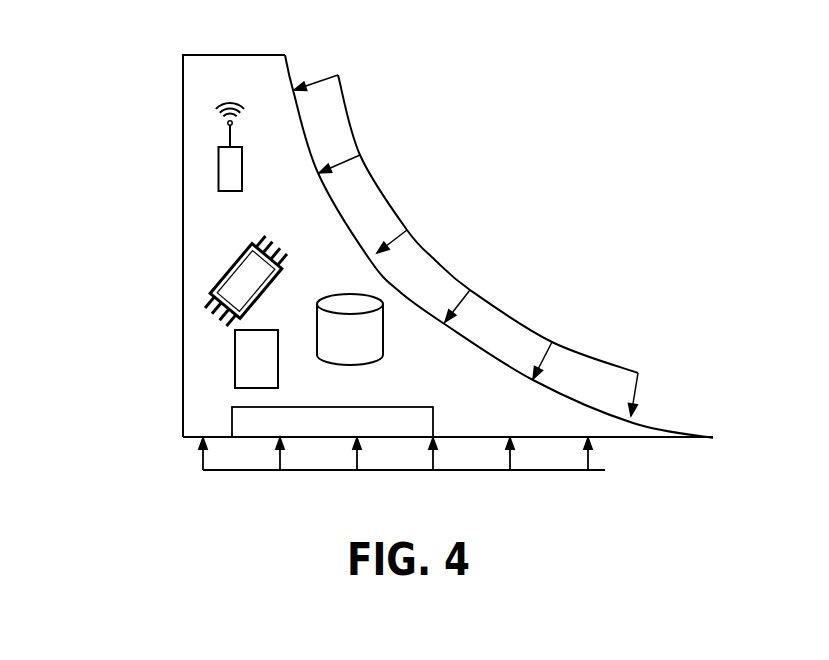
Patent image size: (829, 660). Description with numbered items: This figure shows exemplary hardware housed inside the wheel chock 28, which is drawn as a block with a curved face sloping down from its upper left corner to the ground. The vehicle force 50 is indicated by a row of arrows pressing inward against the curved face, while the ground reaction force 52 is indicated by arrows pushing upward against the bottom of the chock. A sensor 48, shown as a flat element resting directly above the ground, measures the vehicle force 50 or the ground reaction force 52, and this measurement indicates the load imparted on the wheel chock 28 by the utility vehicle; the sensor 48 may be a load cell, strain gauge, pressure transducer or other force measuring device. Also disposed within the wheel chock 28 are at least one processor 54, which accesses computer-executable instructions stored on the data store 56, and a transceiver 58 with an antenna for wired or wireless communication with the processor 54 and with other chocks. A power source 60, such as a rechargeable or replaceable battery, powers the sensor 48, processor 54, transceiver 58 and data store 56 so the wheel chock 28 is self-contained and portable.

The wheel chock 28 is at (115, 35).
The sensor 48 is at (232, 418).
The vehicle force 50 is at (400, 186).
The ground reaction force 52 is at (238, 491).
The processor 54 is at (217, 293).
The data store 56 is at (383, 345).
The transceiver 58 is at (219, 170).
The power source 60 is at (235, 353).